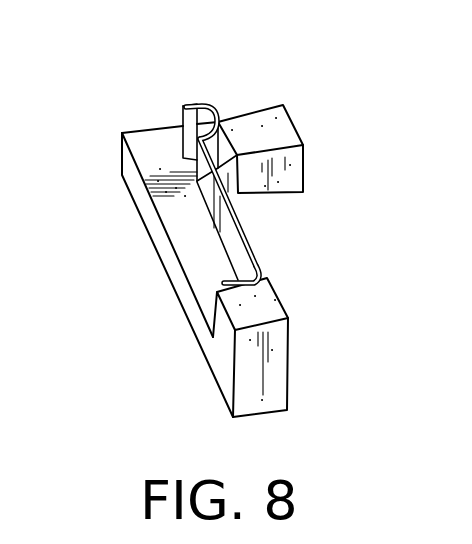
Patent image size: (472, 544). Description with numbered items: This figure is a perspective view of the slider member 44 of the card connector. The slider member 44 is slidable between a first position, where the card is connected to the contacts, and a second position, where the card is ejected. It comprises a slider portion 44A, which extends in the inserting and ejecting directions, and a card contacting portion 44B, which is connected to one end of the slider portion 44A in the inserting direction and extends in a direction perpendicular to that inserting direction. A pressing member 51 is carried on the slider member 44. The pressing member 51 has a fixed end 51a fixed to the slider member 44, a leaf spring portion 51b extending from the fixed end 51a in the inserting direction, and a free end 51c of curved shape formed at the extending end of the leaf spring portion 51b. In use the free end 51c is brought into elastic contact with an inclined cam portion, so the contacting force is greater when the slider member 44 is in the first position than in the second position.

The slider member 44 is at (126, 219).
The slider portion 44A is at (184, 279).
The card contacting portion 44B is at (243, 134).
The pressing member 51 is at (209, 160).
The fixed end 51a is at (228, 281).
The leaf spring portion 51b is at (243, 217).
The free end 51c is at (212, 108).